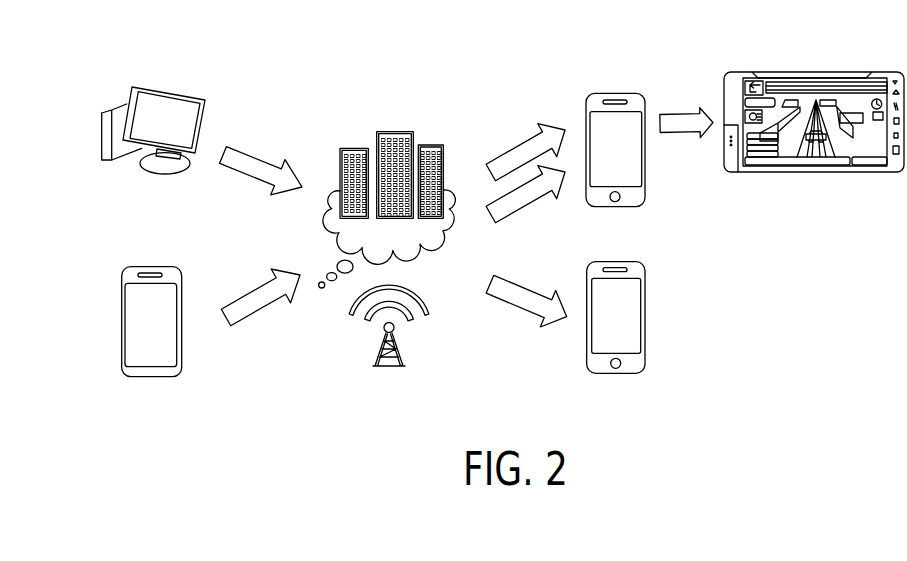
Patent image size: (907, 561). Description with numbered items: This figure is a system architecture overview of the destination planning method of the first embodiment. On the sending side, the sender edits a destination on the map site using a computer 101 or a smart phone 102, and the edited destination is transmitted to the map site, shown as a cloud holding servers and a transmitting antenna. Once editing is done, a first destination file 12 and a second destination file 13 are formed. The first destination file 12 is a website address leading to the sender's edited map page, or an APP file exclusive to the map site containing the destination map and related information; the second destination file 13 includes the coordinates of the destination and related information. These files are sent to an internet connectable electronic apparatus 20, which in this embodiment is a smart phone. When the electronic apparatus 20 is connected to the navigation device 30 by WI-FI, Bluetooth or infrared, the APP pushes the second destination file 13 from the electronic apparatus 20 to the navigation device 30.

The computer 101 is at (170, 108).
The smart phone 102 is at (163, 295).
The first destination file 12 is at (522, 153).
The second destination file 13 is at (518, 197).
The electronic apparatus 20 is at (598, 105).
The navigation device 30 is at (812, 77).